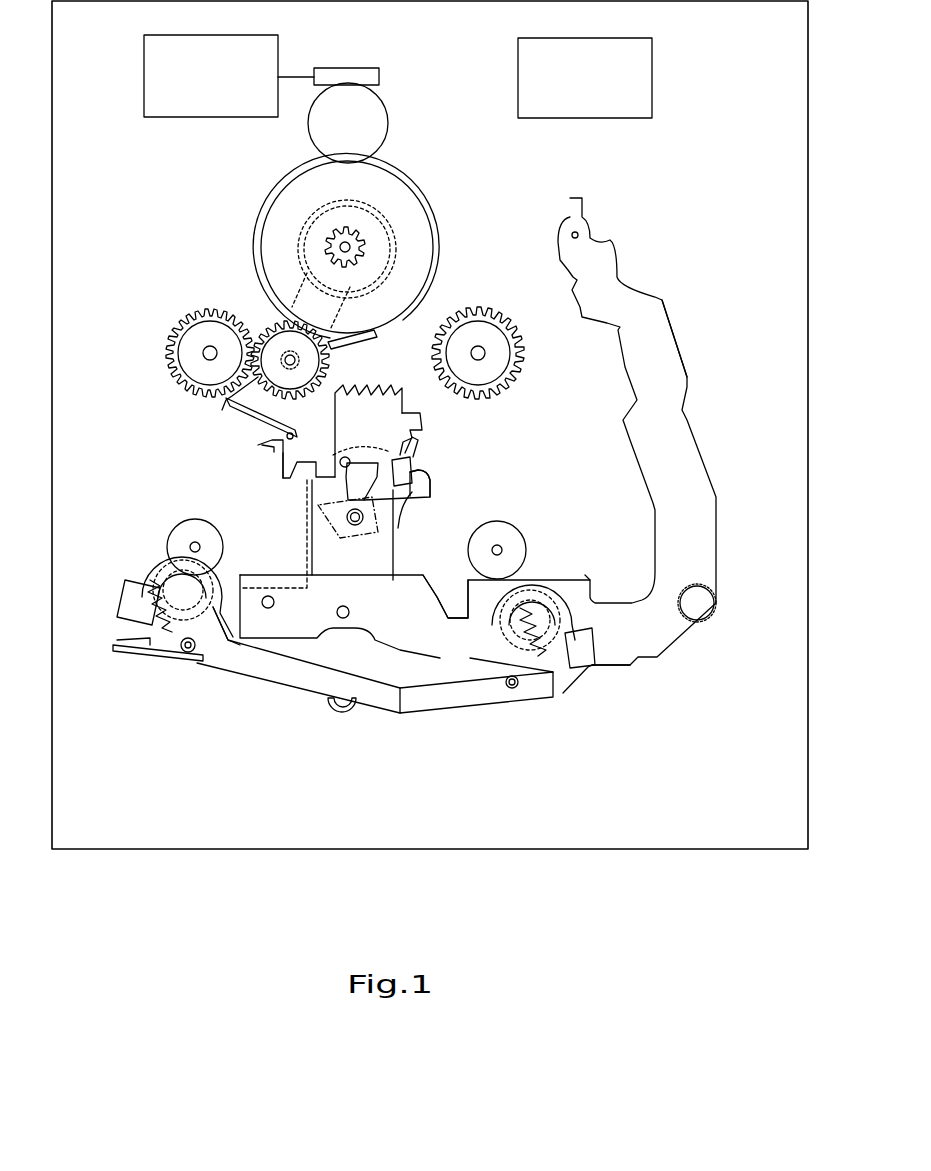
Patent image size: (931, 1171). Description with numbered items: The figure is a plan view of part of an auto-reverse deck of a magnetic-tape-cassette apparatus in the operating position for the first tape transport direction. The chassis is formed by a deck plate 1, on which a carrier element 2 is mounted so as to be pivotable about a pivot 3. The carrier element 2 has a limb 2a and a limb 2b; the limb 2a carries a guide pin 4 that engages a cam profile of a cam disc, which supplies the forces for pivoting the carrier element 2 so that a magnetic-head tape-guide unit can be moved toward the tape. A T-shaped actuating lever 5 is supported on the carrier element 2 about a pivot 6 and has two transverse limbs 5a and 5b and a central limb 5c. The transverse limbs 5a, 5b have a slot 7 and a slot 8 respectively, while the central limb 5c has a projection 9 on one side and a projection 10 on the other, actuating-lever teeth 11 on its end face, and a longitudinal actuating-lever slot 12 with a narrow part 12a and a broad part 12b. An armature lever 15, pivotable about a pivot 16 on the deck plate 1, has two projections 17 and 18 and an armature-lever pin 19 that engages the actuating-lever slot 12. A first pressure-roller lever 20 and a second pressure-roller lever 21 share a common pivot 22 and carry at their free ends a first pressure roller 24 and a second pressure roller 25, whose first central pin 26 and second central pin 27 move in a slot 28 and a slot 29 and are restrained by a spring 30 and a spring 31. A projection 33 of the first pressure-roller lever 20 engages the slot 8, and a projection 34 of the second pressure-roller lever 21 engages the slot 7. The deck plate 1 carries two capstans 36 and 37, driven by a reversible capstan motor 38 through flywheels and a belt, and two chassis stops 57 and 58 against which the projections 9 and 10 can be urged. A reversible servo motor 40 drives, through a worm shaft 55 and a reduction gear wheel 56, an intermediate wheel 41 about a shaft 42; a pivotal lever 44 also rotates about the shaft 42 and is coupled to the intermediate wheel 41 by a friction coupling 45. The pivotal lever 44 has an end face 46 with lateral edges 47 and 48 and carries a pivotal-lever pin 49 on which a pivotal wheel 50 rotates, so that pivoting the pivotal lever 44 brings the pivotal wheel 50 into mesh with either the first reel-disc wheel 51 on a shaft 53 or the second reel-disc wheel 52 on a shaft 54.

The deck plate 1 is at (192, 852).
The carrier element 2 is at (705, 553).
The limb 2a is at (665, 360).
The limb 2b is at (607, 657).
The pivot 3 is at (700, 605).
The guide pin 4 is at (578, 233).
The actuating lever 5 is at (390, 597).
The transverse limb 5a is at (465, 617).
The transverse limb 5b is at (218, 610).
The central limb 5c is at (398, 528).
The pivot 6 is at (350, 611).
The slot 7 is at (163, 657).
The slot 8 is at (490, 692).
The projection 9 is at (427, 488).
The projection 10 is at (297, 462).
The actuating-lever teeth 11 is at (380, 390).
The actuating-lever slot 12 is at (430, 495).
The narrow part 12a is at (348, 529).
The broad part 12b is at (413, 460).
The armature lever 15 is at (310, 498).
The pivot 16 is at (346, 458).
The projection 17 is at (403, 420).
The projection 18 is at (273, 447).
The armature-lever pin 19 is at (362, 528).
The first pressure-roller lever 20 is at (398, 698).
The second pressure-roller lever 21 is at (285, 682).
The common pivot 22 is at (333, 712).
The first pressure roller 24 is at (523, 597).
The second pressure roller 25 is at (153, 568).
The first central pin 26 is at (537, 616).
The second central pin 27 is at (177, 587).
The slot 28 is at (565, 645).
The slot 29 is at (163, 607).
The spring 30 is at (553, 697).
The spring 31 is at (150, 625).
The projection 33 is at (513, 628).
The projection 34 is at (187, 658).
The capstan 36 is at (500, 545).
The capstan 37 is at (193, 545).
The reversible capstan motor 38 is at (643, 82).
The reversible servo motor 40 is at (218, 97).
The intermediate wheel 41 is at (427, 190).
The shaft 42 is at (346, 246).
The pivotal lever 44 is at (322, 368).
The friction coupling 45 is at (318, 237).
The end face 46 is at (253, 420).
The lateral edge 47 is at (230, 407).
The lateral edge 48 is at (292, 437).
The pivotal-lever pin 49 is at (283, 345).
The pivotal wheel 50 is at (335, 343).
The first reel-disc wheel 51 is at (520, 358).
The second reel-disc wheel 52 is at (212, 388).
The shaft 53 is at (480, 350).
The shaft 54 is at (210, 350).
The worm shaft 55 is at (357, 73).
The reduction gear wheel 56 is at (373, 132).
The chassis stop 57 is at (393, 487).
The chassis stop 58 is at (282, 477).